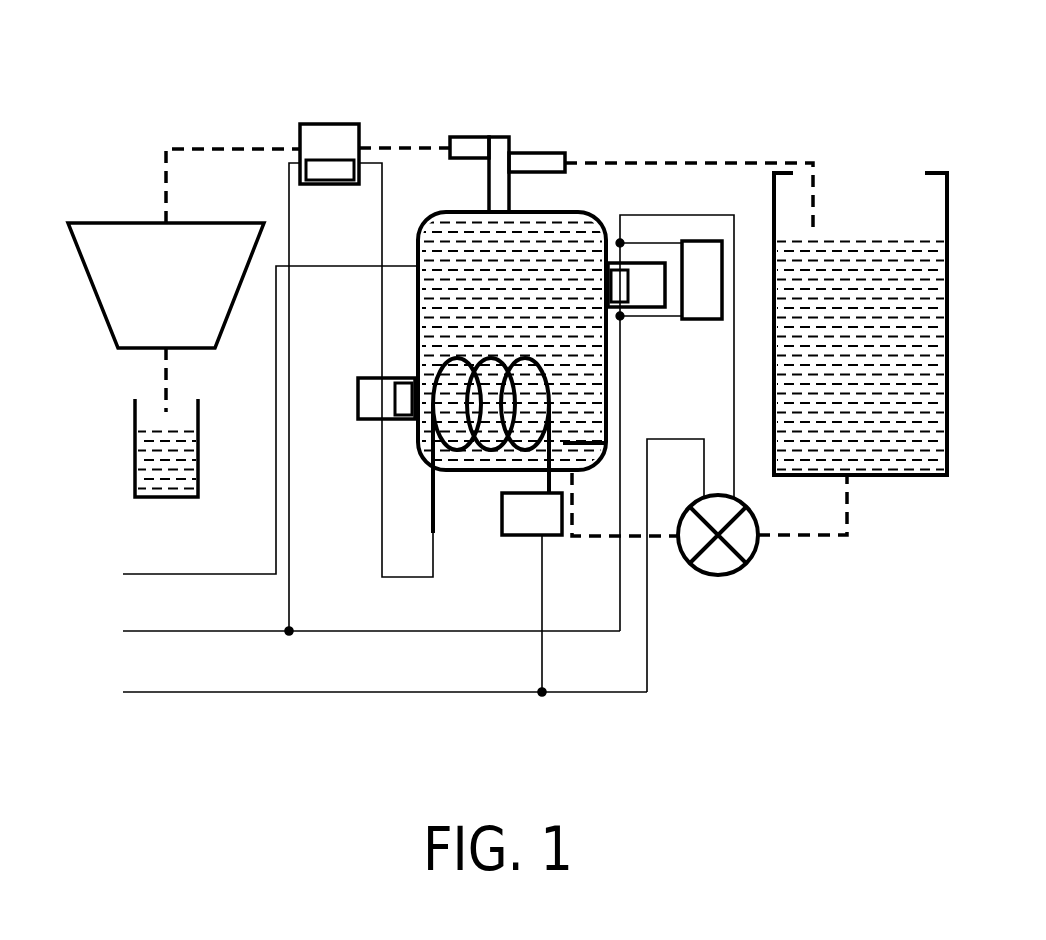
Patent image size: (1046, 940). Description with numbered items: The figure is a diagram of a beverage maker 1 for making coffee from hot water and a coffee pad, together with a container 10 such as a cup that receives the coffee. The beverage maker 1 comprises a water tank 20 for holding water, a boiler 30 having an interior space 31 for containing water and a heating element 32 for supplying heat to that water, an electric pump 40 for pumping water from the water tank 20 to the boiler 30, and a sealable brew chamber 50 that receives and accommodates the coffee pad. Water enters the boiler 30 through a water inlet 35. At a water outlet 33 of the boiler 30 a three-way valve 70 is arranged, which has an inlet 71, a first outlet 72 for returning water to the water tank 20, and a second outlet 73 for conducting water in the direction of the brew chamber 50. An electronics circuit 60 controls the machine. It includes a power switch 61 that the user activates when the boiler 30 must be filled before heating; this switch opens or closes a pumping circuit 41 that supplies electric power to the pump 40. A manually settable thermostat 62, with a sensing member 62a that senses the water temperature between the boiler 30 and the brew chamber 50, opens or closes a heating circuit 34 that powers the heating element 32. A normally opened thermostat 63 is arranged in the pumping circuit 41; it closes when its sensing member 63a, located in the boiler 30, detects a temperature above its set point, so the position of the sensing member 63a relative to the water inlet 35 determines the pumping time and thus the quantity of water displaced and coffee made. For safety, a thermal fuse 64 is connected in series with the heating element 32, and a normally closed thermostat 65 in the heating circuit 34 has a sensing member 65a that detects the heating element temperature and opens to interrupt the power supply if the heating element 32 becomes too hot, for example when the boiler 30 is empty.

The beverage maker 1 is at (800, 65).
The container 10 is at (142, 459).
The water tank 20 is at (865, 200).
The boiler 30 is at (440, 236).
The interior space 31 is at (530, 278).
The heating element 32 is at (478, 452).
The water outlet 33 is at (477, 227).
The heating circuit 34 is at (268, 188).
The water inlet 35 is at (551, 473).
The electric pump 40 is at (720, 560).
The pumping circuit 41 is at (756, 474).
The brew chamber 50 is at (166, 285).
The electronics circuit 60 is at (417, 397).
The power switch 61 is at (669, 279).
The thermostat 62 is at (329, 156).
The sensing member 62a is at (328, 180).
The normally opened thermostat 63 is at (644, 267).
The sensing member 63a is at (622, 287).
The thermal fuse 64 is at (532, 514).
The normally closed thermostat 65 is at (355, 438).
The sensing member 65a is at (402, 412).
The three-way valve 70 is at (508, 121).
The inlet 71 is at (498, 163).
The first outlet 72 is at (540, 158).
The second outlet 73 is at (467, 148).